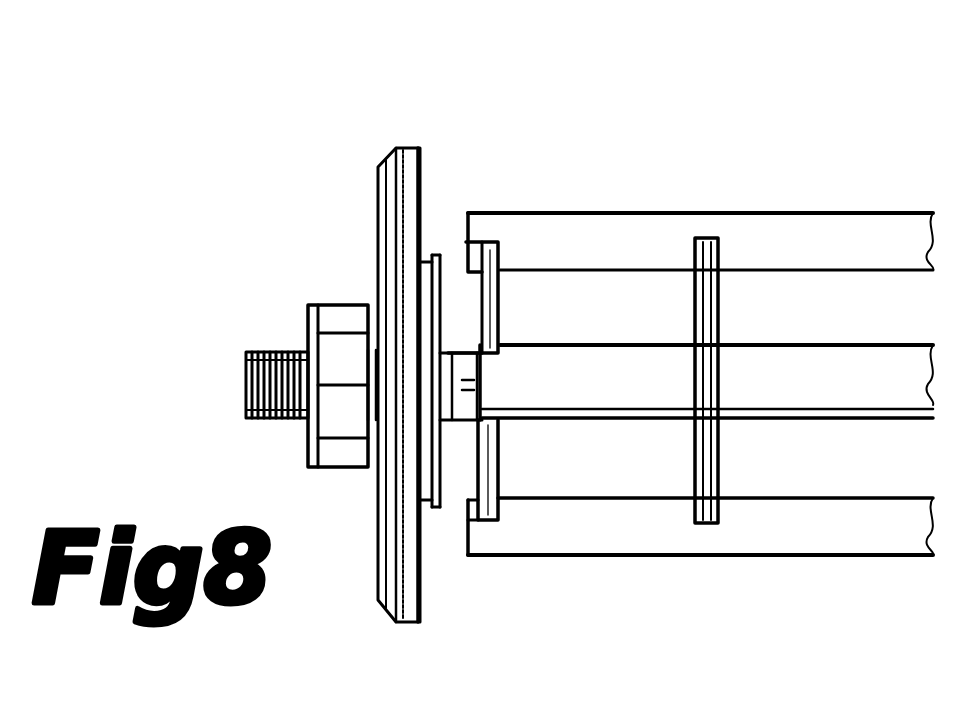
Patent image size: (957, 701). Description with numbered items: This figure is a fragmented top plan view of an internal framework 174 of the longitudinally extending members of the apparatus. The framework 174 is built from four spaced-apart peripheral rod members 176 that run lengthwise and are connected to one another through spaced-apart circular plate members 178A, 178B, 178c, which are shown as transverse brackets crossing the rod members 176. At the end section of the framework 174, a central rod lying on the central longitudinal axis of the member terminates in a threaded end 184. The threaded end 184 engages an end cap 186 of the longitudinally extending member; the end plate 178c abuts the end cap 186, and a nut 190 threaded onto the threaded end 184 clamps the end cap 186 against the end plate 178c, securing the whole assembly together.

The internal framework 174 is at (850, 200).
The peripheral rod member 176 is at (628, 240).
The circular plate member 178A is at (708, 528).
The circular plate member 178B is at (495, 523).
The end plate 178c is at (432, 262).
The threaded end 184 is at (245, 385).
The end cap 186 is at (374, 218).
The nut 190 is at (325, 300).